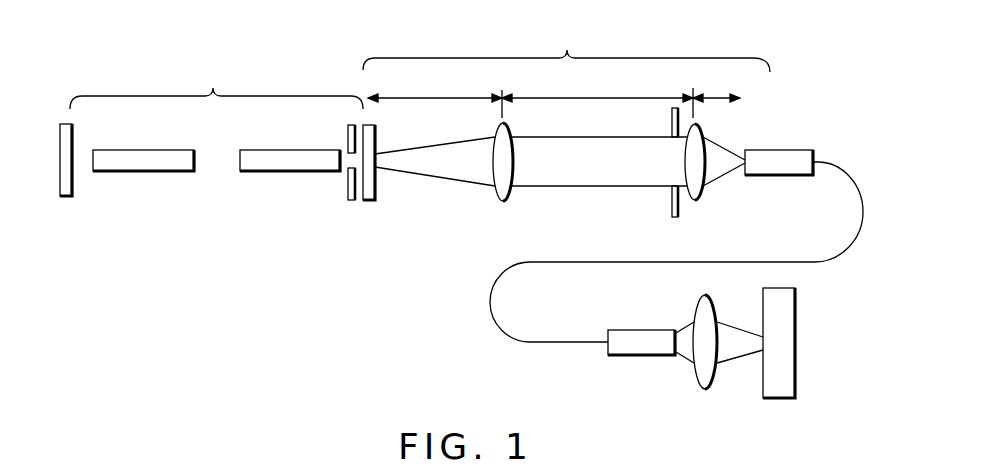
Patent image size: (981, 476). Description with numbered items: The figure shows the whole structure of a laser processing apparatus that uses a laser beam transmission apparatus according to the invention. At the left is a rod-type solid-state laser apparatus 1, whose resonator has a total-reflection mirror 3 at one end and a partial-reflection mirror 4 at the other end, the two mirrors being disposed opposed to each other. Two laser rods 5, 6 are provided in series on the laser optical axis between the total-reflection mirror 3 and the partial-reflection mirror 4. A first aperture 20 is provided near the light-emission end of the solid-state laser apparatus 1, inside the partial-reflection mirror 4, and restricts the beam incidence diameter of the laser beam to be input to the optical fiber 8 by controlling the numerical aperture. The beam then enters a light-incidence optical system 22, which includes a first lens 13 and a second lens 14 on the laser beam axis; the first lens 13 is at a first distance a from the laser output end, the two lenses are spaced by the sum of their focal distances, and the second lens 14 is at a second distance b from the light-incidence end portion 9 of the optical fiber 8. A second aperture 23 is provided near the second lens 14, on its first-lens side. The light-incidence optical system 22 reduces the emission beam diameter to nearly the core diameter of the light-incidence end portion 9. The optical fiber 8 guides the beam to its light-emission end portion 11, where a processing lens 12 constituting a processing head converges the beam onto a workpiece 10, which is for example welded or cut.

The solid-state laser apparatus 1 is at (216, 81).
The total-reflection mirror 3 is at (73, 184).
The partial-reflection mirror 4 is at (376, 188).
The laser rod 5 is at (146, 172).
The laser rod 6 is at (266, 172).
The optical fiber 8 is at (823, 163).
The light-incidence end portion 9 is at (766, 176).
The workpiece 10 is at (780, 399).
The light-emission end portion 11 is at (636, 356).
The processing lens 12 is at (702, 389).
The first lens 13 is at (507, 197).
The second lens 14 is at (700, 197).
The first aperture 20 is at (347, 186).
The light-incidence optical system 22 is at (566, 68).
The second aperture 23 is at (671, 206).